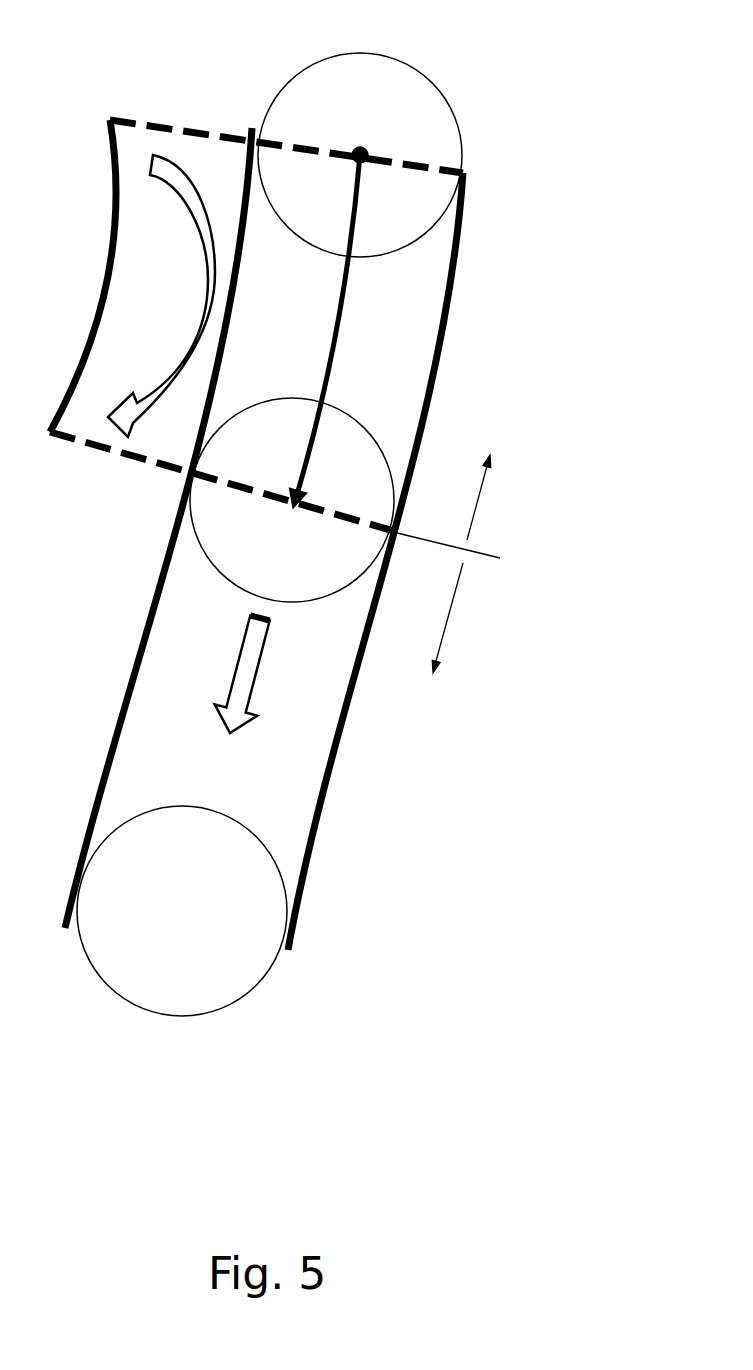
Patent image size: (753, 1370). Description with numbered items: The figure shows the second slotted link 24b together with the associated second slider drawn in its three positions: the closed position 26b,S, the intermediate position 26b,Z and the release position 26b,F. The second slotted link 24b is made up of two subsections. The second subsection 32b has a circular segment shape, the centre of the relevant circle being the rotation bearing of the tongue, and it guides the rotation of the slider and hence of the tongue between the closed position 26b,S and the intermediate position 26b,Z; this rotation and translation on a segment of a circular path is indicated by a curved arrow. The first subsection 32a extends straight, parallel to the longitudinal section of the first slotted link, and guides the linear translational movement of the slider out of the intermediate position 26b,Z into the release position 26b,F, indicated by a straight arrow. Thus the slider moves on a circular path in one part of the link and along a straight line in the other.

The second slotted link 24b is at (163, 570).
The second slider in closed position S 26b,S is at (450, 112).
The second slider in intermediate position Z 26b,Z is at (358, 423).
The second slider in release position F 26b,F is at (283, 880).
The first subsection 32a is at (471, 618).
The second subsection 32b is at (500, 497).